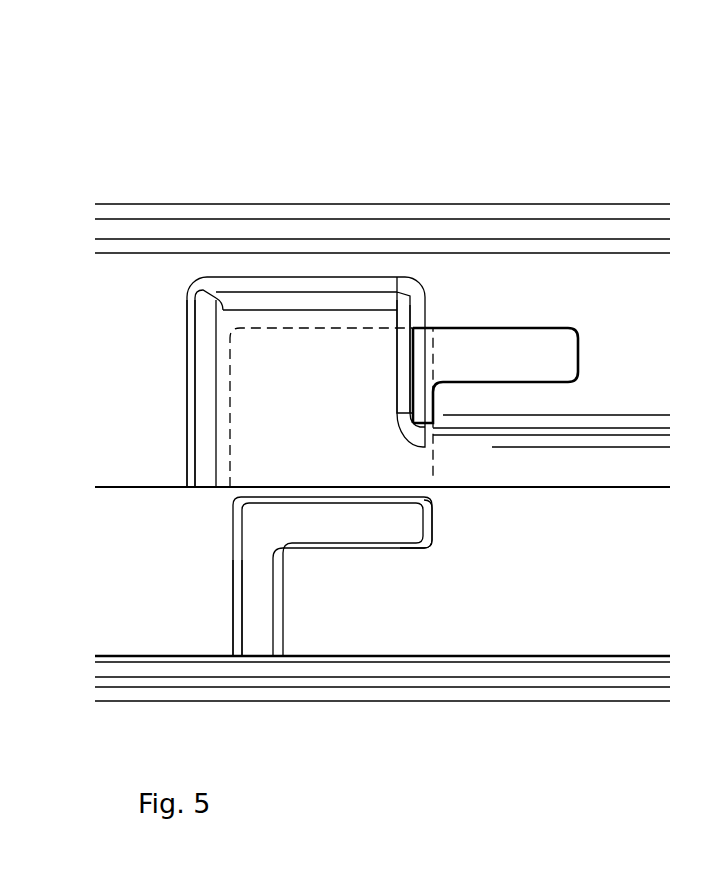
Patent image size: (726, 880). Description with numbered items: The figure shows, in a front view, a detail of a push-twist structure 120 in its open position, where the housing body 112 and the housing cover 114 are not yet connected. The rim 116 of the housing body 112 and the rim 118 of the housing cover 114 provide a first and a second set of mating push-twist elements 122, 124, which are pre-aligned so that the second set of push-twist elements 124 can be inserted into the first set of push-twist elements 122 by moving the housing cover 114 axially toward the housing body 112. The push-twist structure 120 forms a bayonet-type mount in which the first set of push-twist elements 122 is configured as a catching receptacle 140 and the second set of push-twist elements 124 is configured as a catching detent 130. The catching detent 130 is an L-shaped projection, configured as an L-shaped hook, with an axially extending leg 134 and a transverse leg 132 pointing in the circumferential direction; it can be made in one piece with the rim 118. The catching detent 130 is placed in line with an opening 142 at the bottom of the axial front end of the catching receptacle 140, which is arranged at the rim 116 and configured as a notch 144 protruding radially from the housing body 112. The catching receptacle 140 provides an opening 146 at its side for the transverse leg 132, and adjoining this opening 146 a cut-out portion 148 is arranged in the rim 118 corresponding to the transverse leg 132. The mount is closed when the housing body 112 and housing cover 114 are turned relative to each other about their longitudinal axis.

The housing body 112 is at (155, 159).
The housing cover 114 is at (148, 748).
The rim 116 is at (138, 412).
The rim 118 is at (150, 604).
The push-twist structure 120 is at (528, 181).
The first set of push-twist elements 122 is at (319, 304).
The catching receptacle 140 is at (380, 298).
The second set of push-twist elements 124 is at (352, 576).
The catching detent 130 is at (260, 588).
The transverse leg 132 is at (412, 530).
The axially extending leg 134 is at (257, 613).
The opening 142 is at (246, 490).
The notch 144 is at (243, 408).
The opening 146 is at (408, 360).
The cut-out portion 148 is at (556, 328).